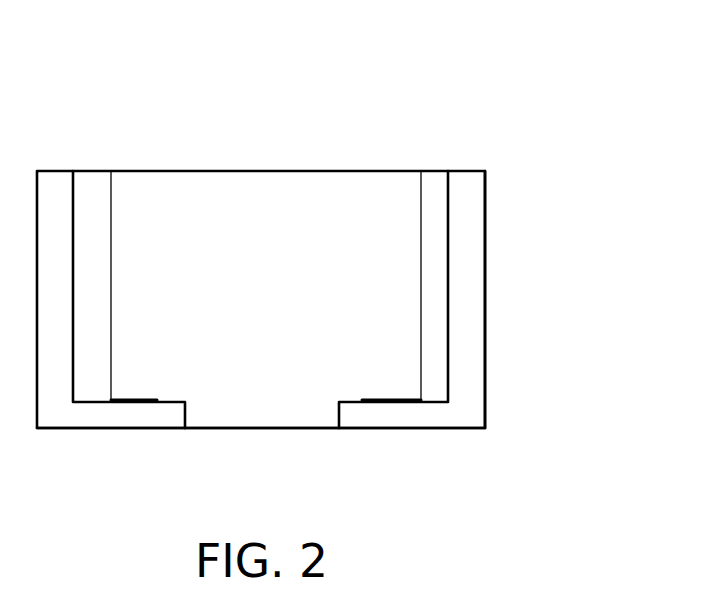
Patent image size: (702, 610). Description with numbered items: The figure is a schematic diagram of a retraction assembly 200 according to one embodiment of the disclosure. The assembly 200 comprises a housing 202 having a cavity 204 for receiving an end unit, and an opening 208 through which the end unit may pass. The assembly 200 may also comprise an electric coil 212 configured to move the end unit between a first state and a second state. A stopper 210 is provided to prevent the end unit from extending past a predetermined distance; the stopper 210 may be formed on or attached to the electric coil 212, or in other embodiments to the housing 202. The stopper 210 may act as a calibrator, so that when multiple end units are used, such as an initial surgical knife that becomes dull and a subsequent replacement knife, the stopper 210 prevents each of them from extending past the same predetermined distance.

The retraction assembly 200 is at (450, 80).
The housing 202 is at (448, 273).
The cavity 204 is at (271, 198).
The opening 208 is at (264, 446).
The stopper 210 is at (114, 444).
The electric coil 212 is at (485, 342).